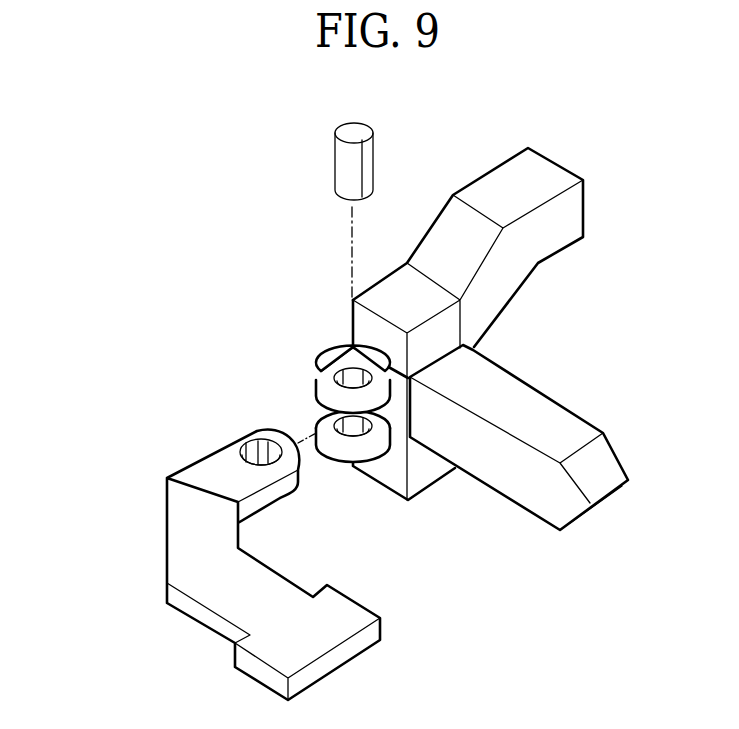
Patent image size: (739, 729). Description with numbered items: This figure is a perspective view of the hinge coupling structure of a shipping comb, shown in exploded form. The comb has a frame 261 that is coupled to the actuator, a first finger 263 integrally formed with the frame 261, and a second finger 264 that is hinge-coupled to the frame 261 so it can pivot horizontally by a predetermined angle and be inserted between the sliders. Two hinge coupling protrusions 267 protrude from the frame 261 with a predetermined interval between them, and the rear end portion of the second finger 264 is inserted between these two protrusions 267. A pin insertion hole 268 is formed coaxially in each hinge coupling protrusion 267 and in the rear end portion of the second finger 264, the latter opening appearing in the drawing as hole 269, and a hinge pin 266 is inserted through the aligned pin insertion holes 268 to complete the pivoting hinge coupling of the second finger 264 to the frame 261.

The frame 261 is at (487, 190).
The first finger 263 is at (547, 407).
The second finger 264 is at (193, 615).
The hinge pin 266 is at (340, 172).
The hinge coupling protrusions 267 is at (318, 420).
The pin insertion hole 268 is at (378, 377).
The pin hole 269 is at (255, 450).